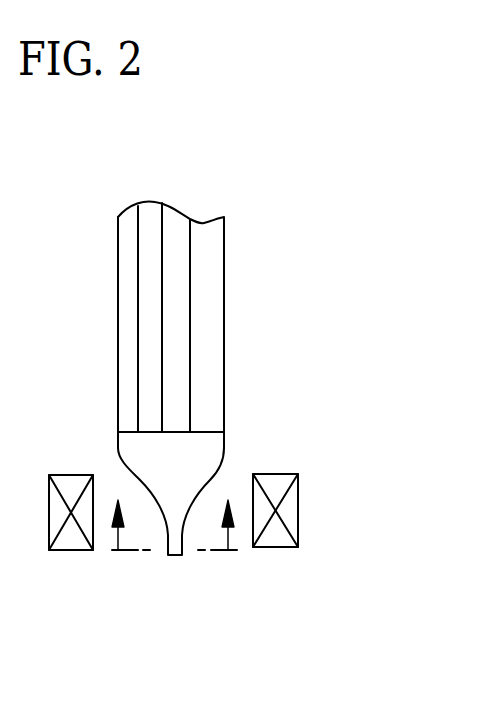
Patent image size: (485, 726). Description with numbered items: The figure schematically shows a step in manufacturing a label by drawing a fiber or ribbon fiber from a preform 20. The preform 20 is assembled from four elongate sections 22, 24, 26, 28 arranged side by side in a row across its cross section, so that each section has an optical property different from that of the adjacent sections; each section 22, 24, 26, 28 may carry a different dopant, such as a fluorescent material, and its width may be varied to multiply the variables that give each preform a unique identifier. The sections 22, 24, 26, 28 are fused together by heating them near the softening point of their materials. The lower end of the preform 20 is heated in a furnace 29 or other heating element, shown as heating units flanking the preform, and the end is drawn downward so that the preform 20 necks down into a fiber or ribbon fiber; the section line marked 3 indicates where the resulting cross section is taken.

The preform 20 is at (192, 341).
The elongate section 22 is at (128, 243).
The elongate section 24 is at (150, 222).
The elongate section 26 is at (178, 228).
The elongate section 28 is at (210, 258).
The furnace 29 is at (70, 475).
The section line 3- 3 is at (173, 544).